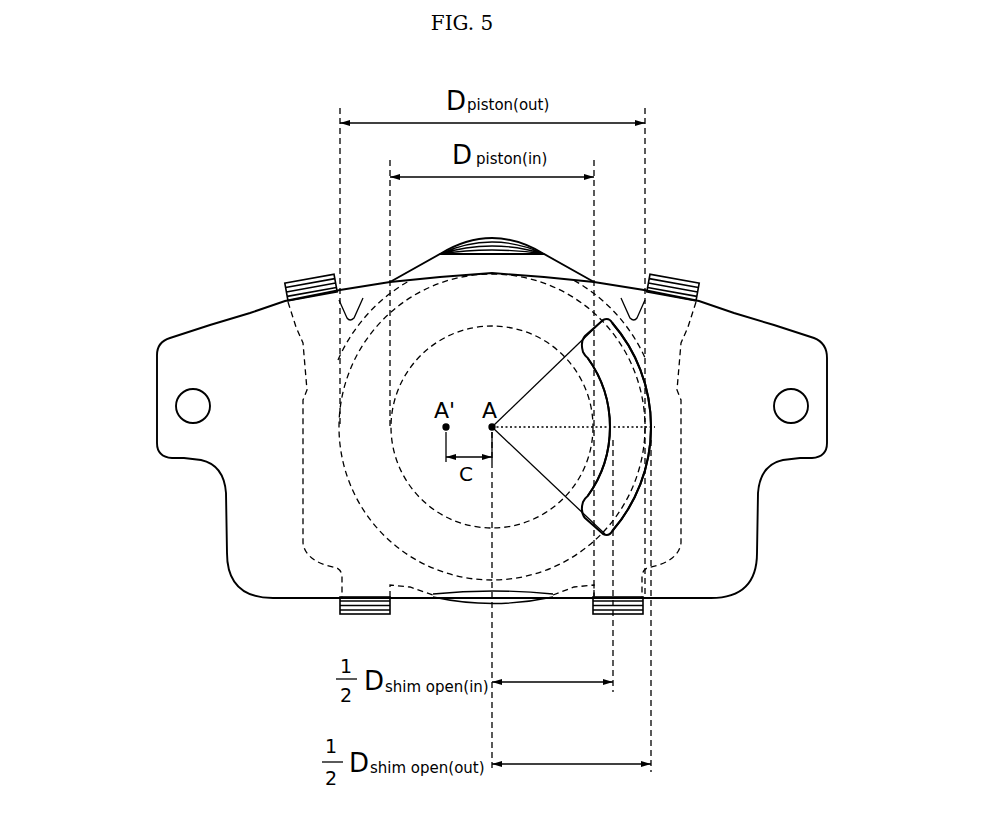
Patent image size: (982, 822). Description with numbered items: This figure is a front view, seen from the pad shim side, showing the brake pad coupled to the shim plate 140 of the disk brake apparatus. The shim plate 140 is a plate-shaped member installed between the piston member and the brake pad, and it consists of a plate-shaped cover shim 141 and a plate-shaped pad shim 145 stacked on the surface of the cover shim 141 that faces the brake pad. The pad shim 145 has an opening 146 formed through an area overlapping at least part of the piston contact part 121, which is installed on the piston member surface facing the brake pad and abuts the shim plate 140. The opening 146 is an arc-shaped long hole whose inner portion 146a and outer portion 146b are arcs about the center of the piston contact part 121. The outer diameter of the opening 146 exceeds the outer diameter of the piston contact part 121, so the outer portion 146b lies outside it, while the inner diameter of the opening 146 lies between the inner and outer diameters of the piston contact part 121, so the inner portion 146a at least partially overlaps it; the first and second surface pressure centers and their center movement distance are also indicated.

The piston contact part 121 is at (365, 372).
The shim plate 140 is at (68, 350).
The cover shim 141 is at (318, 366).
The pad shim 145 is at (182, 437).
The opening 146 is at (620, 387).
The inner portion of the opening 146a is at (598, 485).
The outer portion of the opening 146b is at (650, 438).